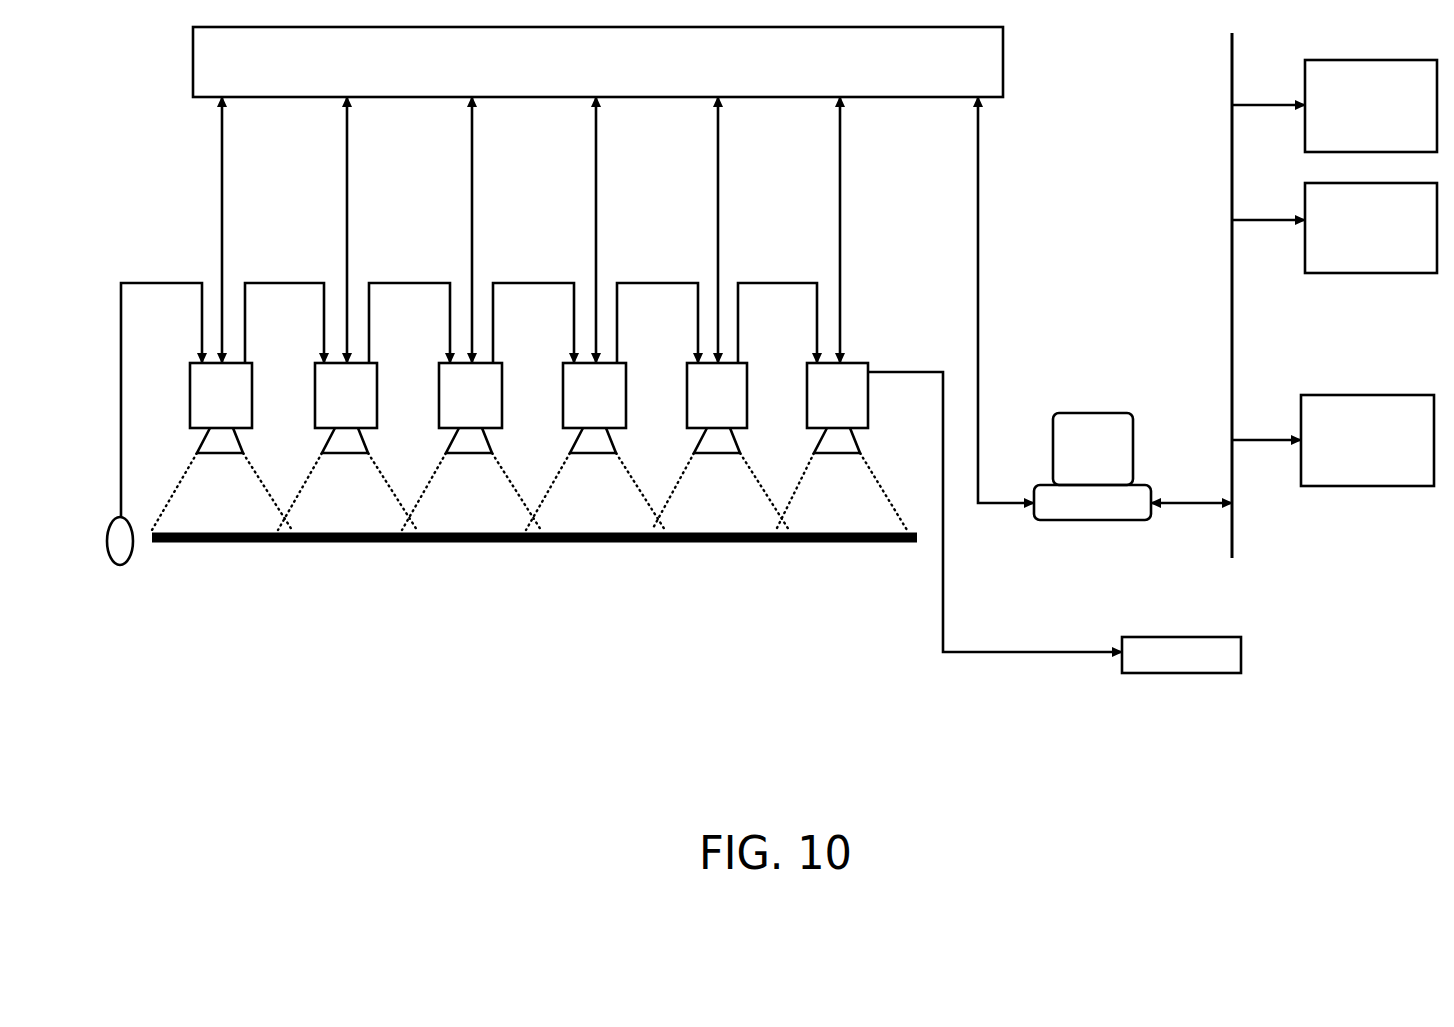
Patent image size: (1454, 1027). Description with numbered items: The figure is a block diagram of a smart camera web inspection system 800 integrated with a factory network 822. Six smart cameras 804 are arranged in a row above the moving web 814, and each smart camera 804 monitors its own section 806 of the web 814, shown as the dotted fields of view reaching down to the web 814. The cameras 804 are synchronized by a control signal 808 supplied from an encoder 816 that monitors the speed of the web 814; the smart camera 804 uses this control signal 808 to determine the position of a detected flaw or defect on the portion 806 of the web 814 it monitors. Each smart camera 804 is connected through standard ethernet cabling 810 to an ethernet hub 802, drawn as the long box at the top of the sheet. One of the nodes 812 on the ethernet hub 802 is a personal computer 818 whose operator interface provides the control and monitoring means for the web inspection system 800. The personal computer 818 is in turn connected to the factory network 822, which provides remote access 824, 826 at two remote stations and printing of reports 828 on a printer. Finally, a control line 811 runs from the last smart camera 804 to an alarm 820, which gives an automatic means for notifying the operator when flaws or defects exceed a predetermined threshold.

The smart camera web inspection system 800 is at (305, 690).
The ethernet hub 802 is at (1003, 48).
The smart camera 804 is at (868, 413).
The section of the web 806 is at (840, 493).
The control signal 808 is at (800, 282).
The ethernet cabling 810 is at (842, 180).
The control line 811 is at (943, 605).
The node 812 is at (978, 180).
The web 814 is at (569, 541).
The encoder 816 is at (133, 545).
The personal computer 818 is at (1115, 520).
The alarm 820 is at (1163, 673).
The factory network 822 is at (1227, 282).
The remote access 824 is at (1347, 60).
The remote access 826 is at (1343, 273).
The printing reports 828 is at (1345, 487).